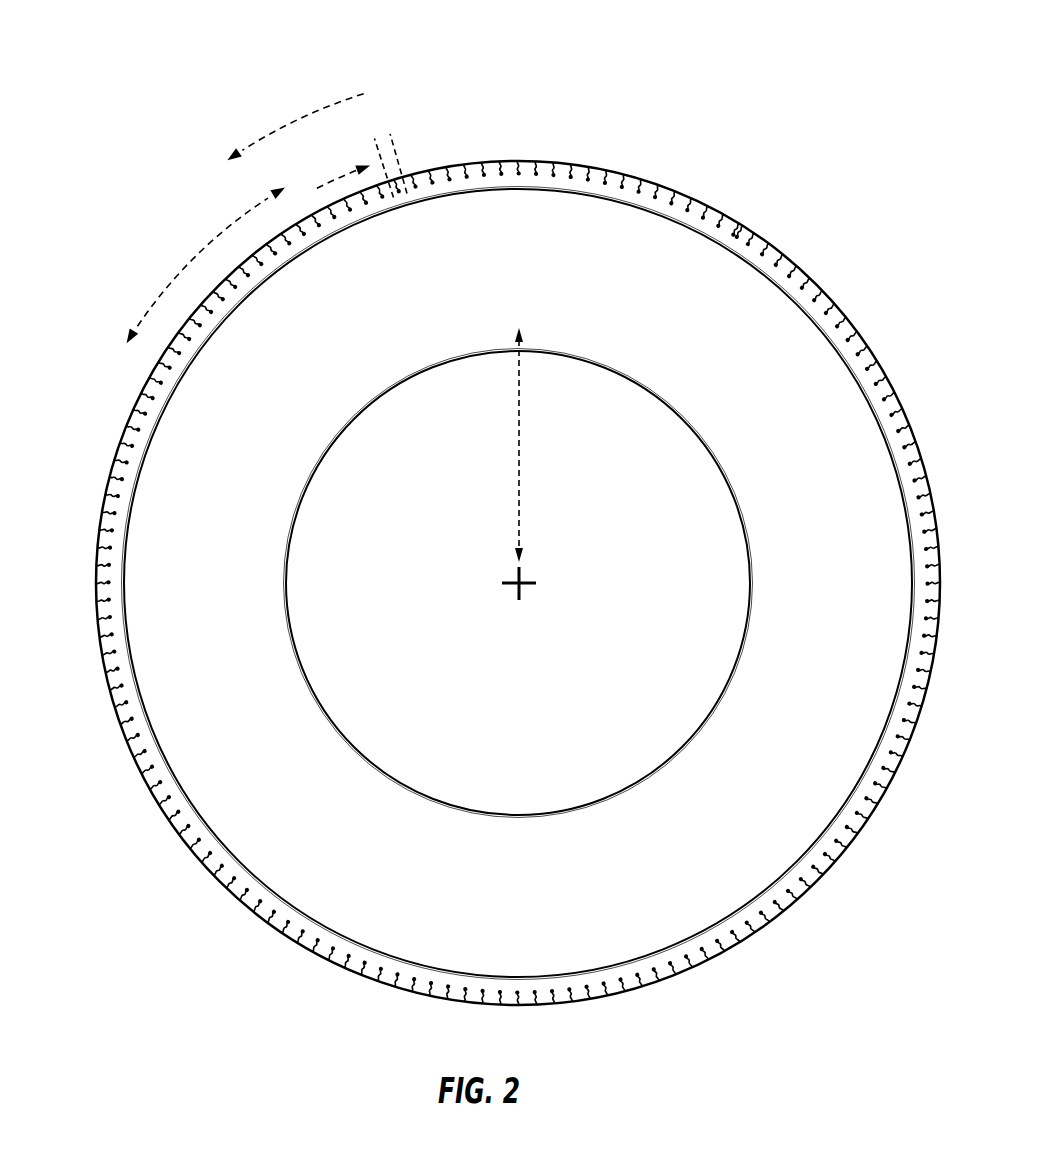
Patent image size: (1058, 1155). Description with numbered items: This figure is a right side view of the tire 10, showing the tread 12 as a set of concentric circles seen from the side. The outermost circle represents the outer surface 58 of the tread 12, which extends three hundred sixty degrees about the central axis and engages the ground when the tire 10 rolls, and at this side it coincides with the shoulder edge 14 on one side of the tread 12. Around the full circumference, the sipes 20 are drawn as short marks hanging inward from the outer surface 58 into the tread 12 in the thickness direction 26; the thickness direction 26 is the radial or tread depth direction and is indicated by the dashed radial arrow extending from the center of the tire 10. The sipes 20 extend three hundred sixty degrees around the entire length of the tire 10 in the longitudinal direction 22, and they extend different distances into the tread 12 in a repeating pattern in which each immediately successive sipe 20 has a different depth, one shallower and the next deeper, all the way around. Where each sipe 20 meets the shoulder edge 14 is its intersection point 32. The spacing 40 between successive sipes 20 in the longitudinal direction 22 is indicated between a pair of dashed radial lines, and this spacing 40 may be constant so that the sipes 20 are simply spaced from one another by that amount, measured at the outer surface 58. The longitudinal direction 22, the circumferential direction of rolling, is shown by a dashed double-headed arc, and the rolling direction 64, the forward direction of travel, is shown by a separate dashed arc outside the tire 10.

The tire 10 is at (868, 57).
The tread 12 is at (505, 161).
The shoulder edge 14 is at (656, 182).
The sipes 20 is at (742, 230).
The longitudinal direction 22 is at (200, 256).
The thickness direction 26 is at (521, 449).
The intersection point 32 is at (586, 166).
The spacing 40 is at (395, 157).
The outer surface 58 is at (110, 452).
The rolling direction 64 is at (291, 126).